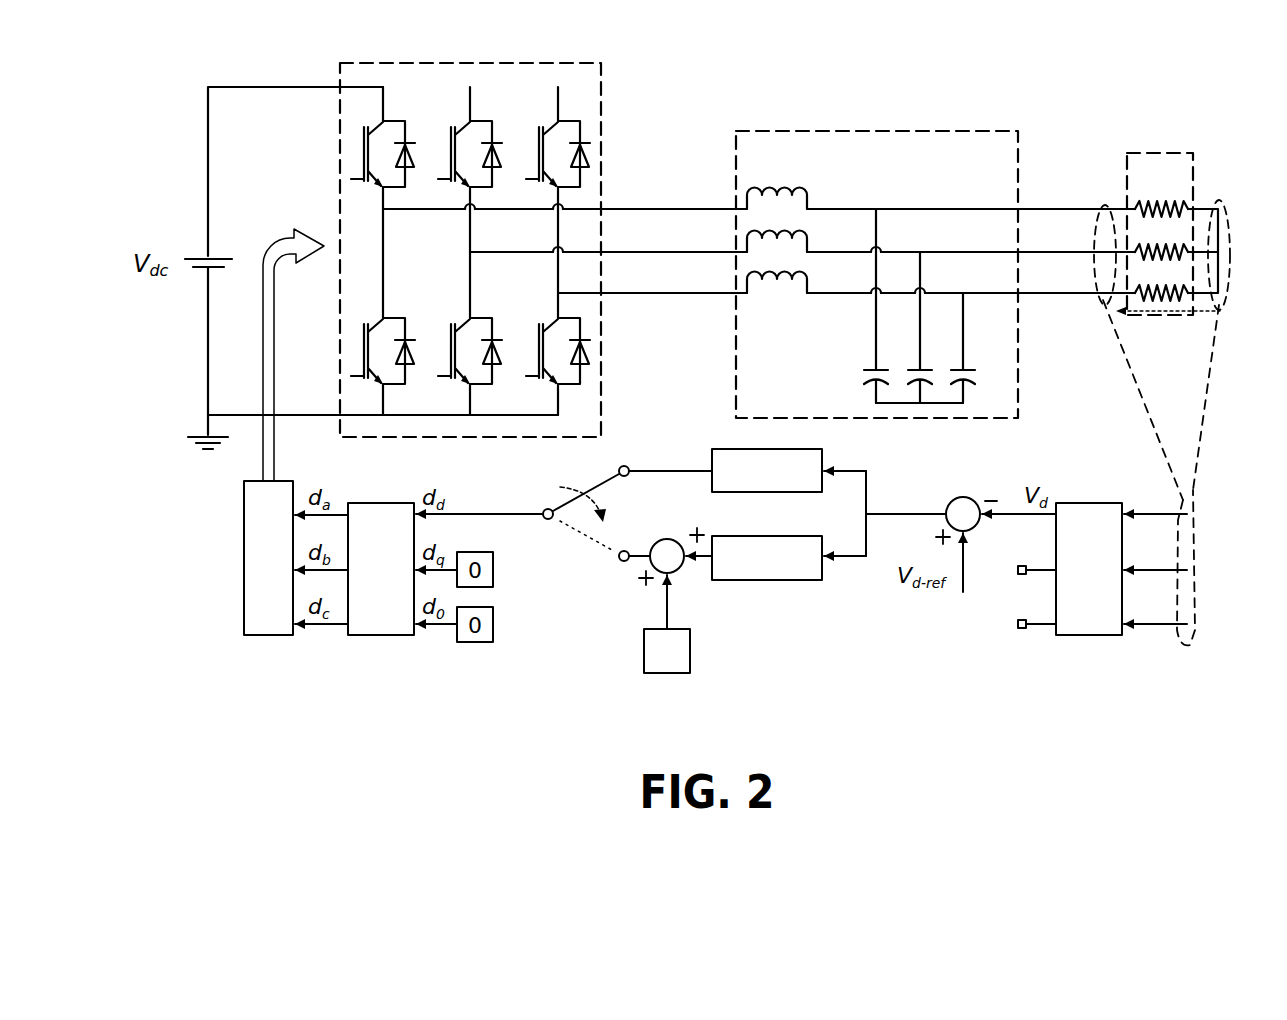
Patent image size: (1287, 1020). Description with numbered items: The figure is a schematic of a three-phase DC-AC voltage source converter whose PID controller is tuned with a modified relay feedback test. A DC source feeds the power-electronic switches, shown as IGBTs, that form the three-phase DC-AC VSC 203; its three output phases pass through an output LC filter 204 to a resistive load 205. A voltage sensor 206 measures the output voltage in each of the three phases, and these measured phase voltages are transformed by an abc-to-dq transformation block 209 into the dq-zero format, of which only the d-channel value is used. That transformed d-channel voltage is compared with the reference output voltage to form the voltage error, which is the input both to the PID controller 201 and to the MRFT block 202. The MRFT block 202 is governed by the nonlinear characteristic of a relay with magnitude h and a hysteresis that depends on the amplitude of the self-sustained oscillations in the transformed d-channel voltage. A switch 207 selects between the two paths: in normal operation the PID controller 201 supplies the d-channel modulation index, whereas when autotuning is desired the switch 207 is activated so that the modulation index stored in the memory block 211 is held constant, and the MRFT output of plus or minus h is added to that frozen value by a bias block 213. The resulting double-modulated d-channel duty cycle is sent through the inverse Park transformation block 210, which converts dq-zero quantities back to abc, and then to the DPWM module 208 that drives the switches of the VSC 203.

The PID controller 201 is at (682, 440).
The MRFT (modified relay feedback test) block 202 is at (777, 585).
The three-phase inverter 203 is at (612, 153).
The LC output filter 204 is at (842, 120).
The resistive load 205 is at (1160, 148).
The output voltage measurement 206 is at (1205, 515).
The switch 207 is at (570, 535).
The DPWM modulator 208 is at (268, 641).
The abc to dq transformation block 209 is at (1078, 641).
The dq to abc transformation block 210 is at (383, 641).
The memory block 211 is at (637, 655).
The summing junction 213 is at (682, 572).